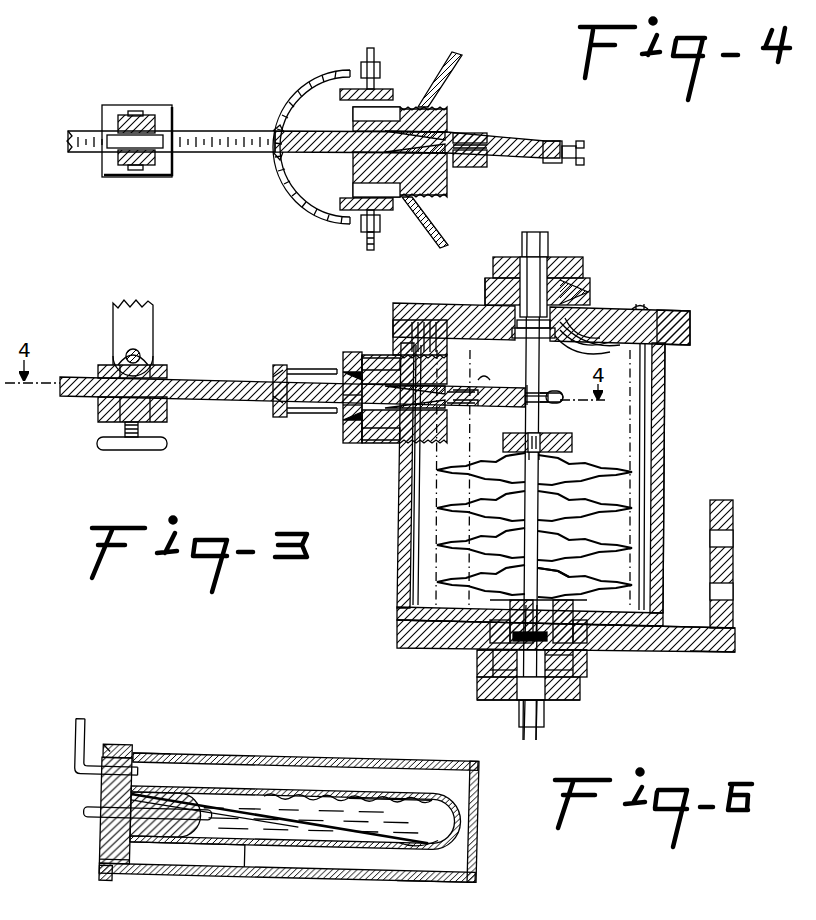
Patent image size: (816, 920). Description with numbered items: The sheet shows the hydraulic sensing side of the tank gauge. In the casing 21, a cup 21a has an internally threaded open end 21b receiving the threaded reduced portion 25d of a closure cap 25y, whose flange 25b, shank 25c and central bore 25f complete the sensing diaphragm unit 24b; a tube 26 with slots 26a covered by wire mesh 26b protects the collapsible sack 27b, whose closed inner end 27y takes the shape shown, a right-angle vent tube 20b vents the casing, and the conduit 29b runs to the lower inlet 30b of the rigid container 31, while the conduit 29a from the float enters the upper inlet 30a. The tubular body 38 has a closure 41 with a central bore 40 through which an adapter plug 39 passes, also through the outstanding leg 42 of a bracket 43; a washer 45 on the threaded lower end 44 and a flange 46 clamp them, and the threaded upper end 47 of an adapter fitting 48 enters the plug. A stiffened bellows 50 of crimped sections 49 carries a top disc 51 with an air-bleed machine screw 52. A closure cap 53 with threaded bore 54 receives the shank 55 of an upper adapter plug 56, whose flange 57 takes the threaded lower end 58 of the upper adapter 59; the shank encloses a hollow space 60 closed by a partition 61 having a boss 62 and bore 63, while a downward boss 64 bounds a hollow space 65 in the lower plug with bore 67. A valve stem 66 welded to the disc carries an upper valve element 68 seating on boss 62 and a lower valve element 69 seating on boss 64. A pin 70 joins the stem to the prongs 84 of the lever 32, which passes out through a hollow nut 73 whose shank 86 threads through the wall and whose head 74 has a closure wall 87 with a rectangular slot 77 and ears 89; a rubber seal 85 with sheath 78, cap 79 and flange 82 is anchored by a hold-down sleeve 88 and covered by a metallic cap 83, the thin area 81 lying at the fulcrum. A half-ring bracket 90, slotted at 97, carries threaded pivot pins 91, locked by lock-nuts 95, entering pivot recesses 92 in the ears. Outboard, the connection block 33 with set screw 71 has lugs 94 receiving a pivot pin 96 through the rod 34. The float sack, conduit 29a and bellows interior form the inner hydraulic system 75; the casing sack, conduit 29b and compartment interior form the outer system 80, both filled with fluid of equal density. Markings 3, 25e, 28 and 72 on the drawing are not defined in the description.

In FIG. 3, the section indicator 3 is at (445, 348).
In FIG. 6, the vent tube 20b is at (76, 754).
In FIG. 6, the casing 21 is at (331, 751).
In FIG. 6, the casing member or cup 21a is at (443, 874).
In FIG. 6, the open end of casing member 21b is at (135, 753).
In FIG. 6, the sensing diaphragm unit 24b is at (98, 793).
In FIG. 6, the flange 25b is at (109, 881).
In FIG. 6, the shank 25c is at (172, 803).
In FIG. 6, the reduced diameter portion 25d is at (121, 745).
In FIG. 6, the flange corner 25e is at (107, 747).
In FIG. 6, the central bore 25f is at (174, 849).
In FIG. 6, the closure cap 25y is at (102, 864).
In FIG. 6, the tube 26 is at (454, 838).
In FIG. 6, the slots 26a is at (279, 789).
In FIG. 6, the wire mesh 26b is at (365, 788).
In FIG. 6, the sensing diaphragm 27b is at (327, 812).
In FIG. 6, the inner end of sensing diaphragm 27y is at (394, 832).
In FIG. 6, the liquid 28 is at (279, 833).
In FIG. 3, the conduit 29a is at (552, 240).
In FIG. 3, the conduit 29b is at (517, 715).
In FIG. 6, the conduit 29b is at (88, 818).
In FIG. 3, the upper inlet 30a is at (626, 262).
In FIG. 3, the lower inlet 30b is at (587, 695).
In FIG. 3, the rigid container 31 is at (665, 440).
In FIG. 4, the lever 32 is at (240, 155).
In FIG. 3, the lever 32 is at (229, 400).
In FIG. 4, the connection block 33 is at (110, 178).
In FIG. 3, the connection block 33 is at (105, 408).
In FIG. 4, the rod 34 is at (118, 130).
In FIG. 3, the rod 34 is at (120, 320).
In FIG. 4, the tubular body 38 is at (447, 76).
In FIG. 3, the tubular body 38 is at (673, 395).
In FIG. 3, the adapter plug 39 is at (510, 608).
In FIG. 3, the central bore 40 is at (600, 650).
In FIG. 3, the body closure 41 is at (430, 612).
In FIG. 3, the outstanding leg of bracket 42 is at (685, 652).
In FIG. 3, the bracket 43 is at (739, 568).
In FIG. 3, the lower end of plug 44 is at (488, 662).
In FIG. 3, the washer 45 is at (480, 652).
In FIG. 3, the flange 46 is at (630, 647).
In FIG. 3, the upper end of adapter fitting 47 is at (490, 677).
In FIG. 3, the adapter fitting 48 is at (567, 705).
In FIG. 3, the metal sections 49 is at (590, 555).
In FIG. 3, the stiffened bellows 50 is at (587, 533).
In FIG. 3, the top disc 51 is at (570, 452).
In FIG. 3, the machine screw 52 is at (575, 440).
In FIG. 3, the closure cap 53 is at (690, 325).
In FIG. 3, the central threaded bore 54 is at (605, 343).
In FIG. 3, the compartment shank 55 is at (580, 335).
In FIG. 3, the upper adapter plug 56 is at (489, 277).
In FIG. 3, the flange 57 is at (490, 292).
In FIG. 3, the lower end of upper adapter 58 is at (565, 288).
In FIG. 3, the upper adapter 59 is at (568, 262).
In FIG. 3, the hollow space 60 is at (580, 340).
In FIG. 3, the partition 61 is at (515, 335).
In FIG. 3, the boss 62 is at (514, 392).
In FIG. 3, the bore 63 is at (578, 352).
In FIG. 3, the downwardly extending boss 64 is at (522, 612).
In FIG. 3, the hollow space 65 is at (570, 678).
In FIG. 4, the valve stem 66 is at (578, 153).
In FIG. 3, the valve stem 66 is at (522, 428).
In FIG. 3, the bore 67 is at (545, 612).
In FIG. 3, the valve element 68 is at (484, 380).
In FIG. 3, the lower valve element 69 is at (580, 652).
In FIG. 4, the pin 70 is at (547, 140).
In FIG. 3, the pin 70 is at (520, 400).
In FIG. 3, the connection block set screw 71 is at (100, 443).
In FIG. 3, the lid screw 72 is at (652, 307).
In FIG. 4, the hollow nut 73 is at (442, 100).
In FIG. 4, the nut head 74 is at (400, 197).
In FIG. 3, the nut head 74 is at (352, 352).
In FIG. 3, the inner hydraulic fluid system 75 is at (540, 732).
In FIG. 3, the rectangular slot 77 is at (350, 385).
In FIG. 4, the sheath 78 is at (460, 165).
In FIG. 3, the sheath 78 is at (408, 418).
In FIG. 3, the cap 79 is at (350, 425).
In FIG. 3, the outer hydraulic fluid system 80 is at (612, 236).
In FIG. 3, the area of minimum depth 81 is at (346, 392).
In FIG. 3, the flange 82 is at (358, 420).
In FIG. 3, the metallic cap 83 is at (350, 370).
In FIG. 4, the prongs 84 is at (565, 141).
In FIG. 3, the prongs 84 is at (562, 405).
In FIG. 4, the seal member 85 is at (445, 130).
In FIG. 3, the seal member 85 is at (390, 415).
In FIG. 3, the shank of nut 86 is at (388, 355).
In FIG. 4, the closure wall 87 is at (405, 110).
In FIG. 3, the closure wall 87 is at (368, 355).
In FIG. 4, the hold-down sleeve 88 is at (475, 133).
In FIG. 4, the ears 89 is at (378, 210).
In FIG. 3, the ears 89 is at (345, 405).
In FIG. 4, the half-ring bracket 90 is at (300, 215).
In FIG. 4, the pivot pins 91 is at (372, 50).
In FIG. 4, the pivot recesses 92 is at (375, 92).
In FIG. 4, the lugs 94 is at (150, 165).
In FIG. 3, the lugs 94 is at (158, 360).
In FIG. 4, the lock-nuts 95 is at (362, 68).
In FIG. 4, the pivot pin 96 is at (145, 112).
In FIG. 3, the pivot pin 96 is at (124, 357).
In FIG. 4, the slot 97 is at (280, 130).
In FIG. 3, the slot 97 is at (275, 412).